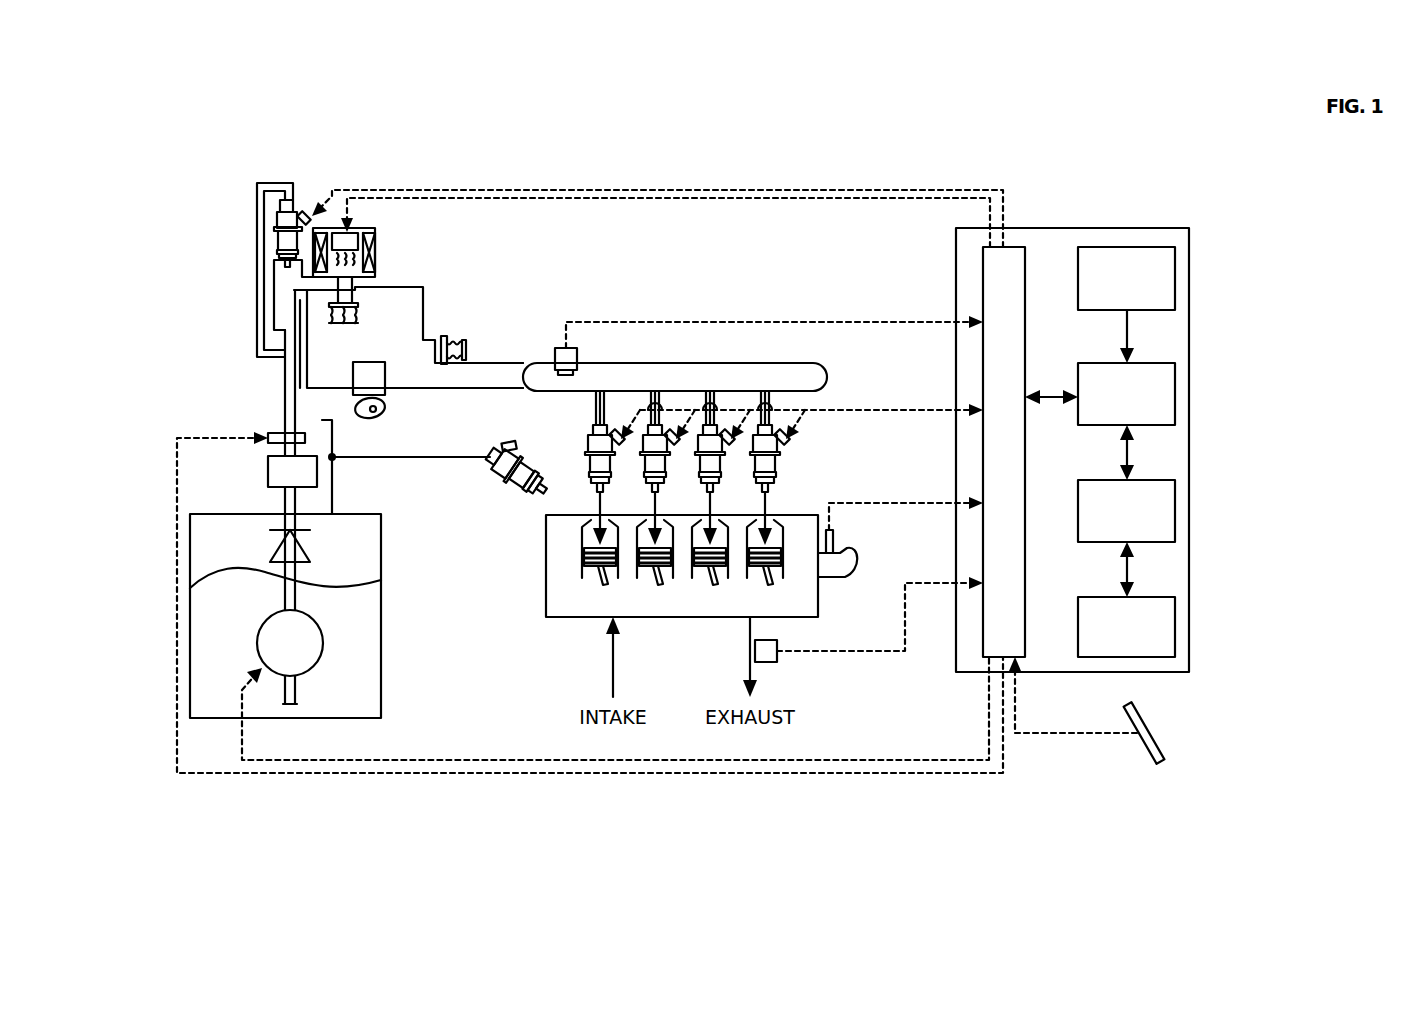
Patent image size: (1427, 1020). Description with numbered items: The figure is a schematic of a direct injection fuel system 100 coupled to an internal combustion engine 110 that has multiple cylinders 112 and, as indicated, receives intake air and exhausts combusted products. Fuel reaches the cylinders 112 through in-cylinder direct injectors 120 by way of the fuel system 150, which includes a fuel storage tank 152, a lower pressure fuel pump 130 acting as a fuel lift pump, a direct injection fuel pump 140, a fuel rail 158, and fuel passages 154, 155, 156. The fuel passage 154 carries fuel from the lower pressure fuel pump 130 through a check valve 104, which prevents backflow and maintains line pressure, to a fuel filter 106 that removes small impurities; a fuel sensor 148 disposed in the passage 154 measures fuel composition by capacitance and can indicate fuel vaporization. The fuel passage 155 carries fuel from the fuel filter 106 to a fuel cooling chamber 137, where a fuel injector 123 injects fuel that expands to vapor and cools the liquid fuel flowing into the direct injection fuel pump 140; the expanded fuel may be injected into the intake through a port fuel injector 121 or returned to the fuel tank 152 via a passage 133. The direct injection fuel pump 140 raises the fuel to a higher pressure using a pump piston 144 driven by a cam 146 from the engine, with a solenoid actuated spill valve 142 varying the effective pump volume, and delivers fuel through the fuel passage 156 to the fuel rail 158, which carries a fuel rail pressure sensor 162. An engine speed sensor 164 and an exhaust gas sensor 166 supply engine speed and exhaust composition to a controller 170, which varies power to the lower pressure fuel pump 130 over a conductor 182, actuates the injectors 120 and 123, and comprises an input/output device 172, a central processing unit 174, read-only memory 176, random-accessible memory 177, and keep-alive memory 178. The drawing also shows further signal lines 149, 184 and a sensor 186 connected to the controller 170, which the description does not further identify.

The direct injection fuel system 100 is at (940, 165).
The check valve 104 is at (270, 552).
The fuel filter 106 is at (292, 471).
The internal combustion engine 110 is at (546, 536).
The cylinders 112 is at (588, 546).
The in-cylinder direct injectors 120 is at (590, 444).
The port fuel injector 121 is at (496, 467).
The fuel injector 123 is at (296, 207).
The lower pressure fuel pump 130 is at (257, 640).
The passage 133 is at (324, 420).
The fuel cooling chamber 137 is at (272, 318).
The direct injection fuel pump 140 is at (423, 307).
The solenoid actuated spill valve 142 is at (377, 260).
The pump piston 144 is at (385, 394).
The cam 146 is at (385, 413).
The fuel sensor 148 is at (270, 433).
The control signal line 149 is at (440, 774).
The fuel system 150 is at (150, 316).
The fuel storage tank 152 is at (381, 522).
The fuel passage 154 is at (285, 515).
The fuel passage 155 is at (285, 378).
The fuel passage 156 is at (480, 364).
The fuel rail 158 is at (826, 368).
The fuel rail pressure sensor 162 is at (578, 354).
The engine speed sensor 164 is at (837, 546).
The exhaust gas sensor 166 is at (778, 646).
The controller 170 is at (1190, 242).
The input/output device 172 is at (982, 648).
The central processing unit 174 is at (1175, 409).
The read-only memory 176 is at (1175, 284).
The random-accessible memory 177 is at (1175, 521).
The keep-alive memory 178 is at (1175, 639).
The conductor 182 is at (553, 761).
The control signal line 184 is at (688, 199).
The pedal position sensor 186 is at (1143, 720).